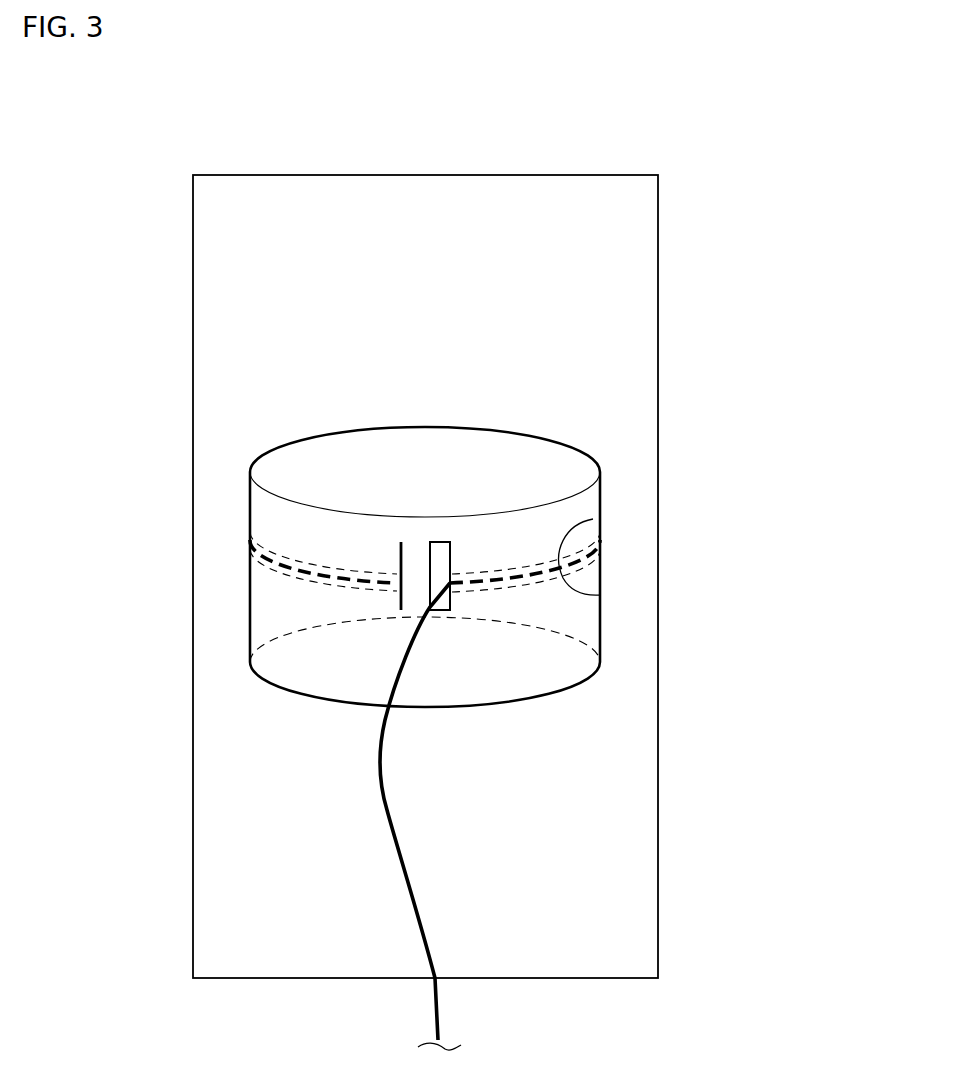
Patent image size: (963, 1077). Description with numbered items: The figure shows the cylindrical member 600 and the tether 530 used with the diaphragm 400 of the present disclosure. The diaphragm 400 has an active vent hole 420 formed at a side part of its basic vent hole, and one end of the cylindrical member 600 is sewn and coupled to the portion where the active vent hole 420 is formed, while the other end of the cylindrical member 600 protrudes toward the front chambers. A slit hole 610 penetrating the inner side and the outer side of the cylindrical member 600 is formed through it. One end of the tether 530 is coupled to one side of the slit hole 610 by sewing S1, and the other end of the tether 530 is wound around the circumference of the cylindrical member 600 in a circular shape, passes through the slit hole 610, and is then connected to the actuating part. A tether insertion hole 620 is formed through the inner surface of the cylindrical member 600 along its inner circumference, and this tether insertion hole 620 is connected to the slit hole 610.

The diaphragm 400 is at (418, 203).
The active vent hole 420 is at (495, 670).
The tether 530 is at (600, 515).
The cylindrical member 600 is at (601, 615).
The slit hole 610 is at (440, 548).
The tether insertion hole 620 is at (290, 577).
The sewing S1 is at (400, 555).